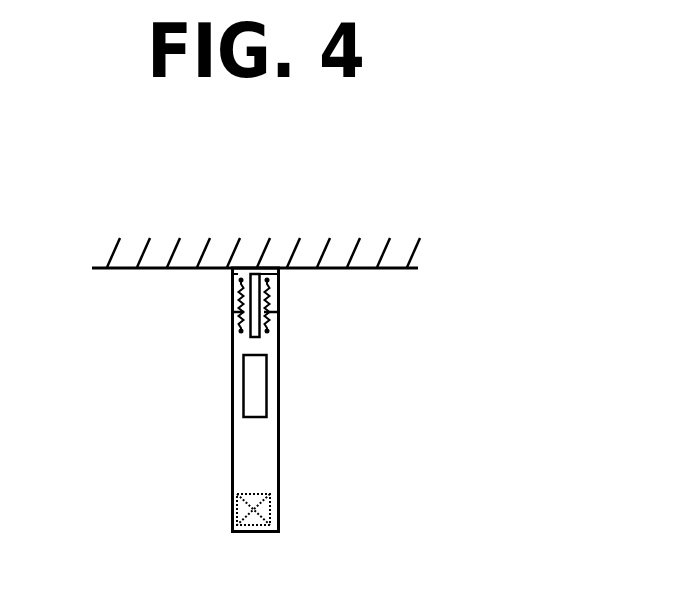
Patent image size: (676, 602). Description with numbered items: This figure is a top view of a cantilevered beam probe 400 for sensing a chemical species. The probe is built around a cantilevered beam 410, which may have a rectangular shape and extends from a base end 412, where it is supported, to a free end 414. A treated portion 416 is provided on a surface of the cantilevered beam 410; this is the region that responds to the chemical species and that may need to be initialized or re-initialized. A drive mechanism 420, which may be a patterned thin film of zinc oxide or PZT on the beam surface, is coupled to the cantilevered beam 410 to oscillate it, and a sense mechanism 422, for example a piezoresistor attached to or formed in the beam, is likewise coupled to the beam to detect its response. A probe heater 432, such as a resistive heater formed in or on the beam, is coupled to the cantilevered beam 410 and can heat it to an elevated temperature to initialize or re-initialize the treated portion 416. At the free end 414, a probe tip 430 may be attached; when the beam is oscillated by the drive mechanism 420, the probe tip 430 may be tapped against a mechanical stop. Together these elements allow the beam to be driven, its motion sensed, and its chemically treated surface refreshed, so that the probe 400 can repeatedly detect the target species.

The cantilevered beam probe 400 is at (72, 162).
The cantilevered beam 410 is at (190, 376).
The base end 412 is at (232, 280).
The drive mechanism 420 is at (279, 277).
The probe heater 432 is at (232, 313).
The sense mechanism 422 is at (279, 313).
The treated portion 416 is at (267, 387).
The probe tip 430 is at (270, 510).
The free end 414 is at (233, 522).